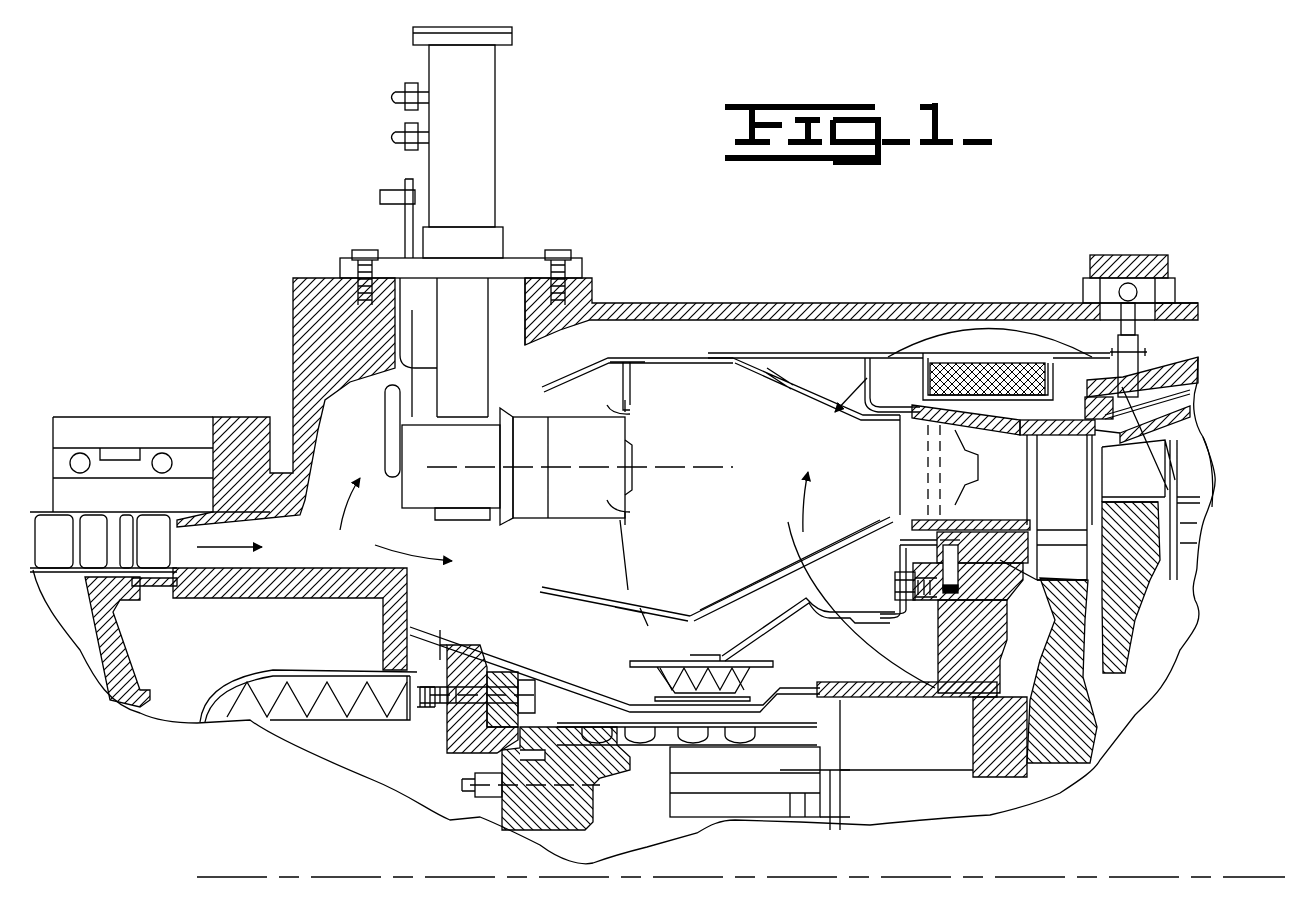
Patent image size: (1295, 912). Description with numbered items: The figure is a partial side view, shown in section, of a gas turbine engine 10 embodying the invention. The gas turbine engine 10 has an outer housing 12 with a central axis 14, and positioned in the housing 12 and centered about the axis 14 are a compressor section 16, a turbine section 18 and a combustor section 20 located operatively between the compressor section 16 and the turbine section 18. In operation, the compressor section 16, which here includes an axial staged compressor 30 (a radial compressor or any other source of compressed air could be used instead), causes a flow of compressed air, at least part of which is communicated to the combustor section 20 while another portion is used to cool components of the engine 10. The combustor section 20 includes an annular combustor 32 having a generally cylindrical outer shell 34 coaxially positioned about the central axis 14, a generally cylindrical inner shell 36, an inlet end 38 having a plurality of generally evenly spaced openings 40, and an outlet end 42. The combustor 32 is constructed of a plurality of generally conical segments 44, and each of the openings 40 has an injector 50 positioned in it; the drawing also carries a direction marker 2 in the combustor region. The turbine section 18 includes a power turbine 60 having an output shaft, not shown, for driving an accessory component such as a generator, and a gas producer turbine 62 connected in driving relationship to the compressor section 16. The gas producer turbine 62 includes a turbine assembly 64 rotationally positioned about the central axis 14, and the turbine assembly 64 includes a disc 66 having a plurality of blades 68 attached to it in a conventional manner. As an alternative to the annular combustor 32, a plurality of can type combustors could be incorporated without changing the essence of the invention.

The combustion zone 2 is at (861, 558).
The gas turbine engine 10 is at (866, 278).
The outer housing 12 is at (765, 303).
The central axis 14 is at (1055, 877).
The compressor section 16 is at (160, 390).
The turbine section 18 is at (1176, 675).
The combustor section 20 is at (670, 278).
The axial staged compressor 30 is at (117, 637).
The annular combustor 32 is at (562, 377).
The outer shell 34 is at (756, 372).
The inner shell 36 is at (687, 608).
The inlet end 38 is at (563, 603).
The openings 40 is at (608, 515).
The outlet end 42 is at (800, 518).
The conical segments 44 is at (757, 583).
The injector 50 is at (625, 432).
The power turbine 60 is at (1165, 613).
The gas producer turbine 62 is at (1117, 730).
The turbine assembly 64 is at (1123, 703).
The disc 66 is at (1025, 790).
The blades 68 is at (1080, 476).